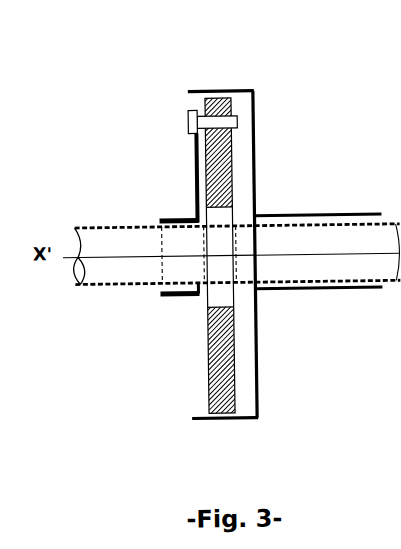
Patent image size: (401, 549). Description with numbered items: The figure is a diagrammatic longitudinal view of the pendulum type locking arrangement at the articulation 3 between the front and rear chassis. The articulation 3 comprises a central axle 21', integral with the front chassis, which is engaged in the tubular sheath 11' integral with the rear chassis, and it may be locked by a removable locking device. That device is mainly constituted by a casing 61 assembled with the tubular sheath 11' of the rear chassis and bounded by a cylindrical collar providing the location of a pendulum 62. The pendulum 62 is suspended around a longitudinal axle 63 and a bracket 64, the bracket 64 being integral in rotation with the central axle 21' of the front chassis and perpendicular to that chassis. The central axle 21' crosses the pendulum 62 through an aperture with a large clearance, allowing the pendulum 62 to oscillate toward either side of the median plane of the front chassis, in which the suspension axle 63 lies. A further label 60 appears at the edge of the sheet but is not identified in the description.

The articulation 3 is at (289, 320).
The tubular sheath 11' is at (270, 216).
The central axle 21' is at (230, 350).
The coupling 60 is at (392, 349).
The casing 61 is at (213, 420).
The pendulum 62 is at (226, 165).
The longitudinal axle 63 is at (174, 119).
The bracket 64 is at (196, 175).